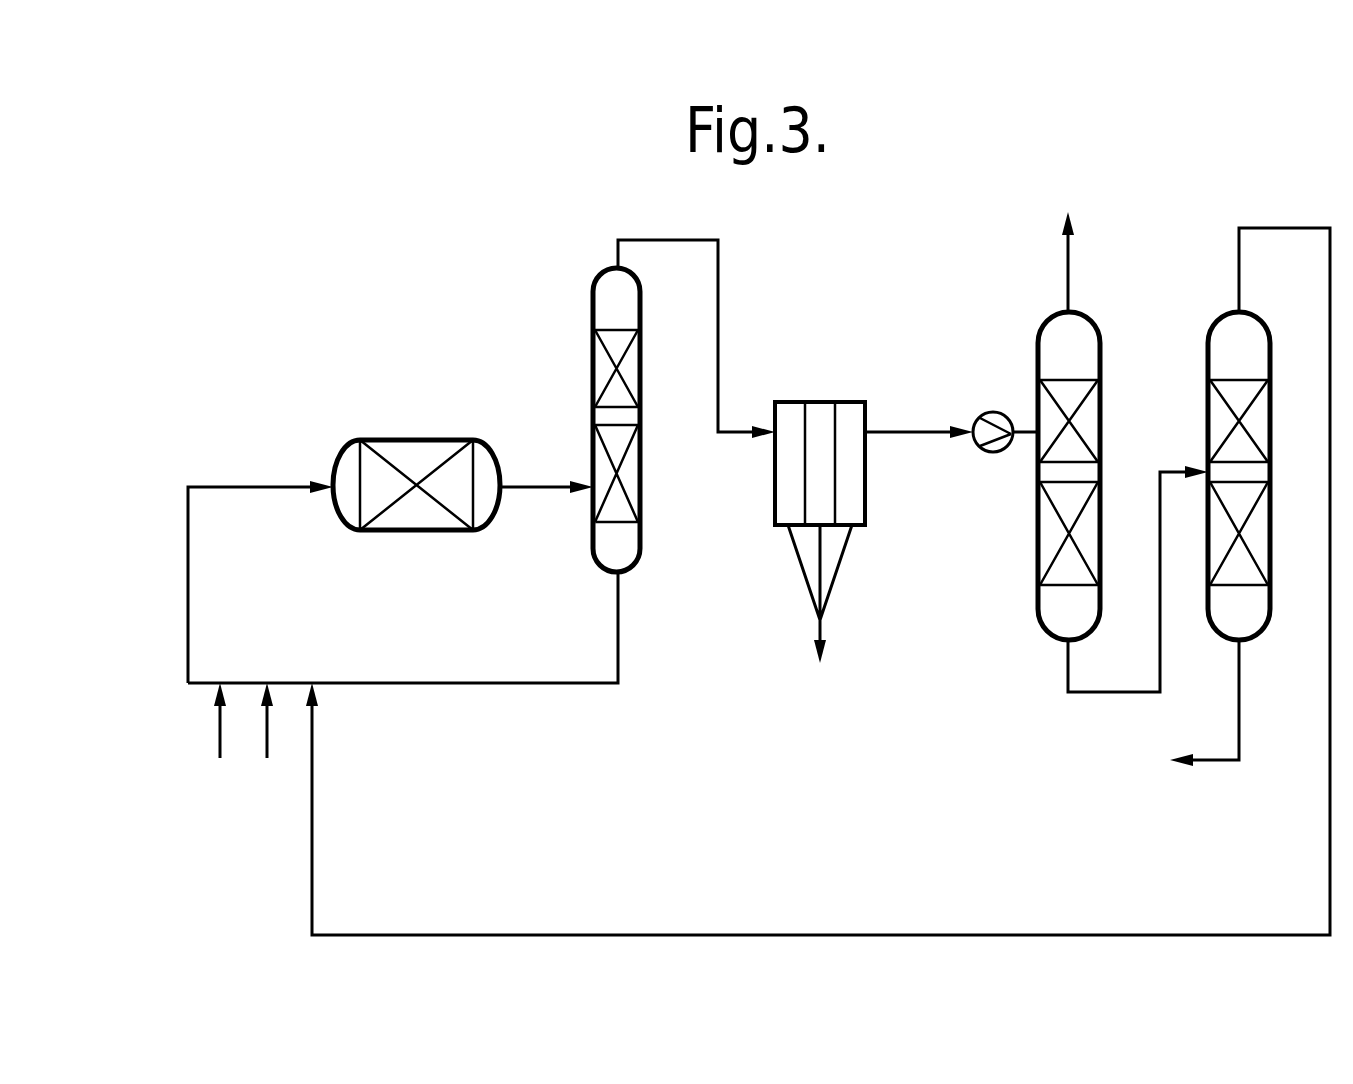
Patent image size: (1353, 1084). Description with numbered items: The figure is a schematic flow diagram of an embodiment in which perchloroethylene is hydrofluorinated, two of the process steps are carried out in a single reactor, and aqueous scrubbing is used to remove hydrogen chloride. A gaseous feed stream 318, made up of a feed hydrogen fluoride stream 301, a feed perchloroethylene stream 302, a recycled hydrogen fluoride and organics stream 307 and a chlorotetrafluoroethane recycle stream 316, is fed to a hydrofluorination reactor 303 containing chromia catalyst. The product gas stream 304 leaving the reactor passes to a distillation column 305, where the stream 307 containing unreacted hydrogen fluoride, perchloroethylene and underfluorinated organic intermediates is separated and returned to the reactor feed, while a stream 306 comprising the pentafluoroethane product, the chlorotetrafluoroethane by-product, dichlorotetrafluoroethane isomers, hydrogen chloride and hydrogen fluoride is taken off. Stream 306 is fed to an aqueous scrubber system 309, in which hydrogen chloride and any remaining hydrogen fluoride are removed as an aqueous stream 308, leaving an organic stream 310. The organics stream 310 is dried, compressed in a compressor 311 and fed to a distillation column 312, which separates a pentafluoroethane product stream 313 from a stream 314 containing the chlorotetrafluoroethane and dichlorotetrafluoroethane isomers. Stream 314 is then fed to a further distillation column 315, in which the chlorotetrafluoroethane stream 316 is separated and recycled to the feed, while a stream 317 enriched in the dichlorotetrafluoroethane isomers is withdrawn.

The feed hydrogen fluoride stream 301 is at (216, 735).
The feed perchloroethylene stream 302 is at (266, 748).
The hydrofluorination reactor 303 is at (398, 438).
The product gas stream 304 is at (538, 484).
The distillation column 305 is at (592, 306).
The stream comprising product HFA 125, HCFC 124, CFC 114/114a, HCl and HF 306 is at (718, 270).
The recycled hydrogen fluoride and organics stream 307 is at (617, 630).
The aqueous stream 308 is at (838, 583).
The aqueous scrubber system 309 is at (820, 410).
The organics stream 310 is at (901, 430).
The compressor 311 is at (997, 452).
The distillation column 312 is at (1036, 608).
The HFA 125 stream 313 is at (1066, 250).
The stream containing HCFC 124 and CFC 114/114a 314 is at (1112, 693).
The distillation column 315 is at (1210, 320).
The HCFC 124 recycle stream 316 is at (1238, 255).
The stream enriched in CFC 114/114a 317 is at (1239, 722).
The gaseous feed stream 318 is at (188, 612).